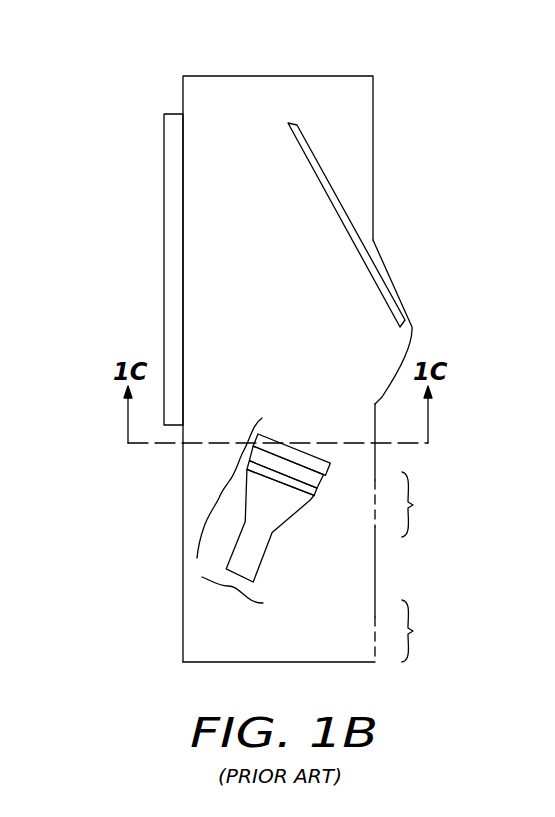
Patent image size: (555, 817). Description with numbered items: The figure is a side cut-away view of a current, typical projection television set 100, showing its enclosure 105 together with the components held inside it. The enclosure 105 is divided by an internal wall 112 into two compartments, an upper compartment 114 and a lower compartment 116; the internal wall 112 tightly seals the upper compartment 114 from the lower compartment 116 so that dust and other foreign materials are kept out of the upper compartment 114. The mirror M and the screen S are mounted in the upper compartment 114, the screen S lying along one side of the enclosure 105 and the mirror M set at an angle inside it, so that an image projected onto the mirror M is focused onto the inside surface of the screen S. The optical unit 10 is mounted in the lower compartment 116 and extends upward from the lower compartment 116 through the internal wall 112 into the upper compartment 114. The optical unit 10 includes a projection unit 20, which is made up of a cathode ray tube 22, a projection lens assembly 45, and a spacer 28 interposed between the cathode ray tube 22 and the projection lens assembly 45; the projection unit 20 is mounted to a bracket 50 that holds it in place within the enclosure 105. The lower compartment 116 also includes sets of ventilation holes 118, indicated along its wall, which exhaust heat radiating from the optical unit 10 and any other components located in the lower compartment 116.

The projection television set 100 is at (68, 175).
The upper compartment 114 is at (230, 88).
The enclosure 105 is at (380, 189).
The lower compartment 116 is at (182, 527).
The internal wall 112 is at (213, 443).
The ventilation holes 118 is at (413, 567).
The bracket 50 is at (318, 465).
The projection lens assembly 45 is at (287, 467).
The spacer 28 is at (308, 487).
The cathode ray tube 22 is at (268, 519).
The optical unit 10 is at (229, 488).
The projection unit 20 is at (232, 600).
The screen S is at (164, 284).
The mirror M is at (315, 172).